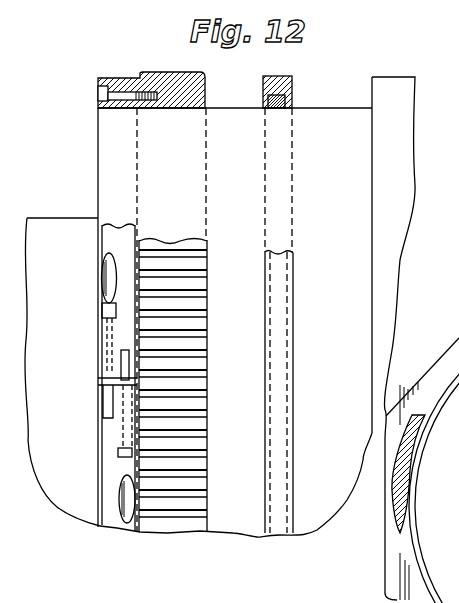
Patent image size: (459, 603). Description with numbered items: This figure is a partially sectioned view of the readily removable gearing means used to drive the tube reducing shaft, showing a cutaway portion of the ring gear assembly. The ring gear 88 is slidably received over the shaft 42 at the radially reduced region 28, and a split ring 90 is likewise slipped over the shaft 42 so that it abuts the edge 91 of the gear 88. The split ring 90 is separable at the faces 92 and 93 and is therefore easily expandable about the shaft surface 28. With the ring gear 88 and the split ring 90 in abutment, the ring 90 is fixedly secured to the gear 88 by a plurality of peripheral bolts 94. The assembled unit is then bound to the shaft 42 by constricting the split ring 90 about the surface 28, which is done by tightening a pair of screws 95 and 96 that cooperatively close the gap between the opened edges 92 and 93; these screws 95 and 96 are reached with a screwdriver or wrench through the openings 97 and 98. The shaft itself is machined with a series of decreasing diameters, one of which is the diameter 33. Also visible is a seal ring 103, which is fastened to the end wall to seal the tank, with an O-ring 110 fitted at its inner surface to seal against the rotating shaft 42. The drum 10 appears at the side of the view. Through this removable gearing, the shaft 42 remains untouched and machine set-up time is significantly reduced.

The split ring 90 is at (116, 137).
The peripheral bolts 94 is at (124, 92).
The radially reduced region 28 is at (228, 107).
The seal ring 103 is at (278, 71).
The O-ring 110 is at (288, 100).
The shaft 42 is at (444, 50).
The decreasing diameter 33 is at (77, 195).
The edge 91 is at (134, 533).
The opening 97 is at (105, 273).
The screw 95 is at (107, 327).
The face 93 is at (118, 376).
The face 92 is at (118, 387).
The screw 96 is at (118, 427).
The opening 98 is at (122, 491).
The ring gear 88 is at (173, 507).
The drum 10 is at (410, 483).